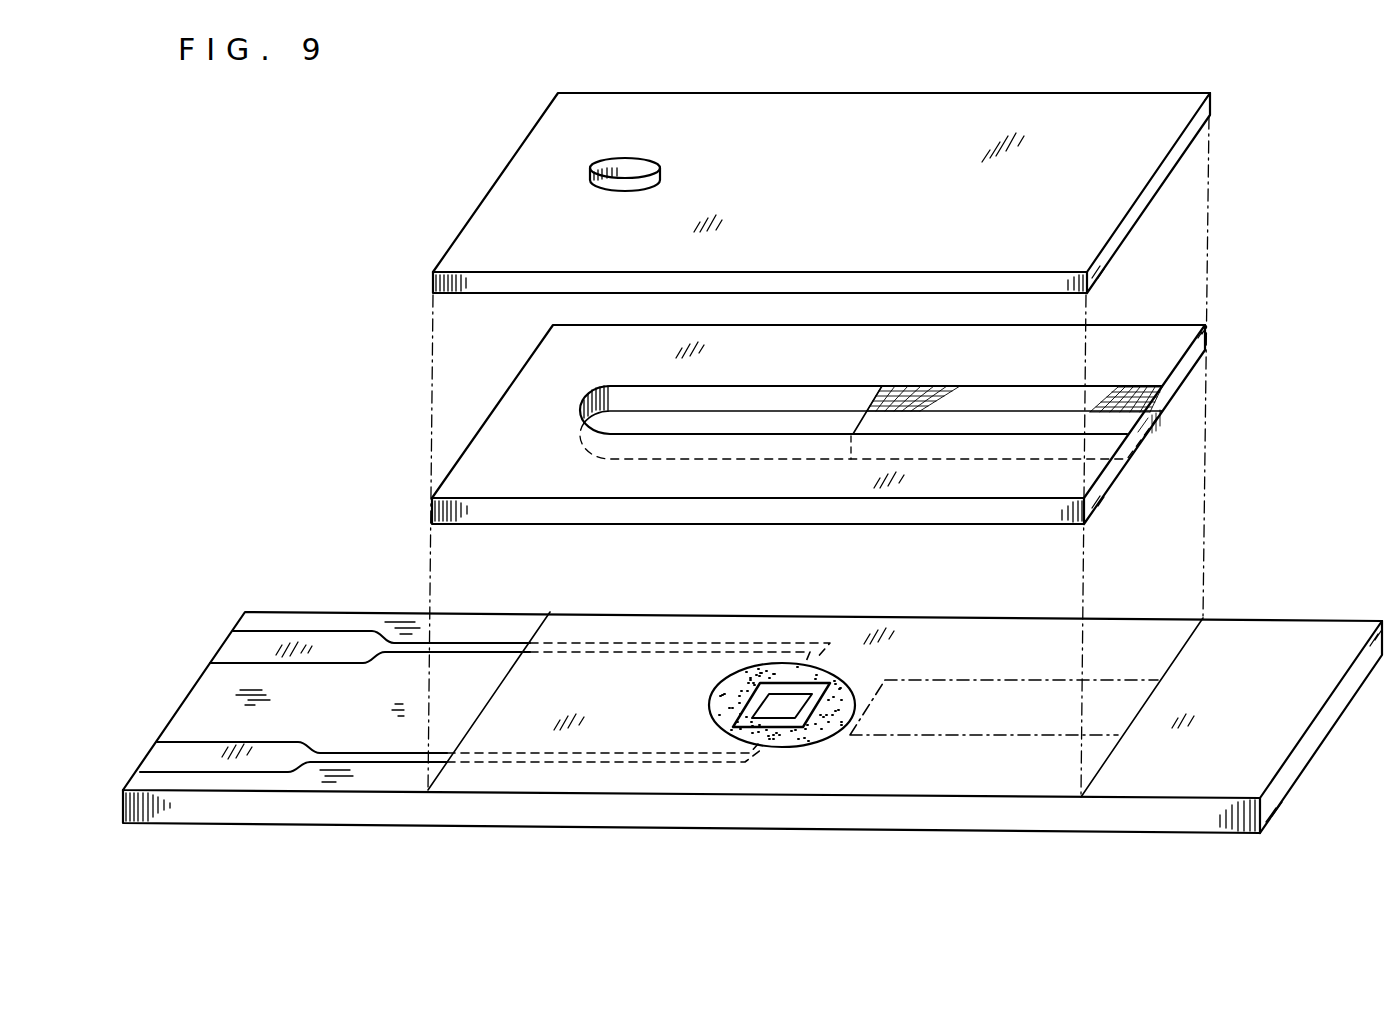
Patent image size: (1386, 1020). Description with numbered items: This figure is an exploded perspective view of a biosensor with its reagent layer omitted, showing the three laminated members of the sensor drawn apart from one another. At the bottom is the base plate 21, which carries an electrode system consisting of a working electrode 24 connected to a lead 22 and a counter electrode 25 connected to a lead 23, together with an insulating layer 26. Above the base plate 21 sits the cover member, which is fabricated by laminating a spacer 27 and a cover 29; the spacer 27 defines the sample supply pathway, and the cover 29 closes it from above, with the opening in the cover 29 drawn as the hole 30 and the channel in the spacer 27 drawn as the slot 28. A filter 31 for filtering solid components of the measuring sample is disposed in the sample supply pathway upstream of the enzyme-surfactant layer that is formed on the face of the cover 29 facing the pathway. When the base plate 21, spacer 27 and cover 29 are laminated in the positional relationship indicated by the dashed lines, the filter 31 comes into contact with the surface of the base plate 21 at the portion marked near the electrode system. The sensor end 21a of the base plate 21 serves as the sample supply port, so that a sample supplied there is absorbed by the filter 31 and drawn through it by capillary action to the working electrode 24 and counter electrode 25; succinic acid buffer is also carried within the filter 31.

The base plate 21 is at (330, 808).
The sensor end 21a is at (1255, 650).
The lead 22 is at (178, 757).
The lead 23 is at (313, 652).
The working electrode 24 is at (782, 710).
The counter electrode 25 is at (727, 712).
The insulating layer 26 is at (487, 782).
The spacer 27 is at (492, 452).
The channel slot 28 is at (590, 392).
The cover 29 is at (502, 225).
The vent hole 30 is at (622, 185).
The filter 31 is at (1163, 418).